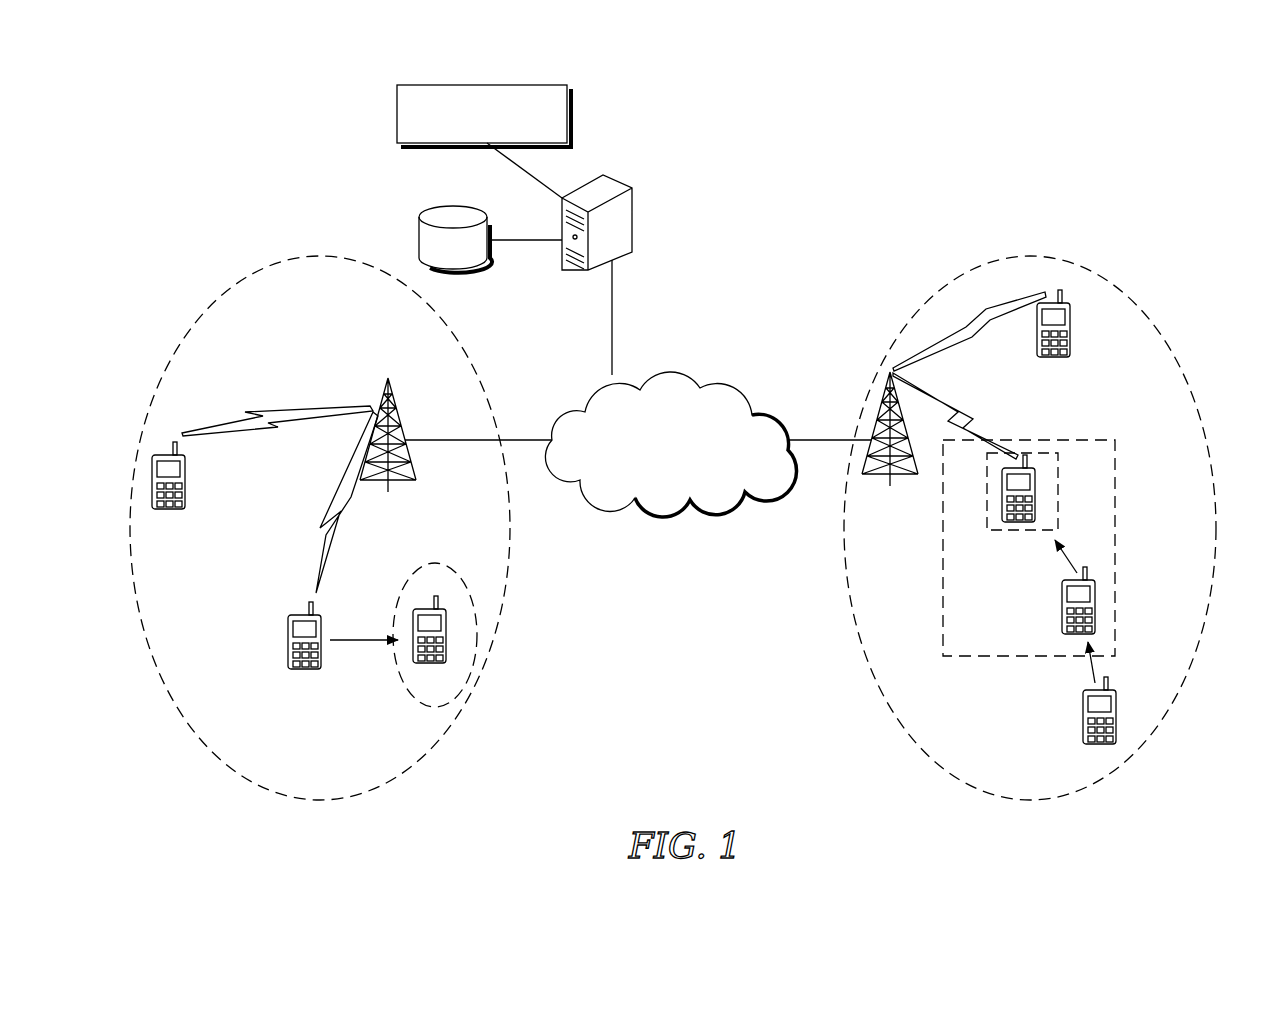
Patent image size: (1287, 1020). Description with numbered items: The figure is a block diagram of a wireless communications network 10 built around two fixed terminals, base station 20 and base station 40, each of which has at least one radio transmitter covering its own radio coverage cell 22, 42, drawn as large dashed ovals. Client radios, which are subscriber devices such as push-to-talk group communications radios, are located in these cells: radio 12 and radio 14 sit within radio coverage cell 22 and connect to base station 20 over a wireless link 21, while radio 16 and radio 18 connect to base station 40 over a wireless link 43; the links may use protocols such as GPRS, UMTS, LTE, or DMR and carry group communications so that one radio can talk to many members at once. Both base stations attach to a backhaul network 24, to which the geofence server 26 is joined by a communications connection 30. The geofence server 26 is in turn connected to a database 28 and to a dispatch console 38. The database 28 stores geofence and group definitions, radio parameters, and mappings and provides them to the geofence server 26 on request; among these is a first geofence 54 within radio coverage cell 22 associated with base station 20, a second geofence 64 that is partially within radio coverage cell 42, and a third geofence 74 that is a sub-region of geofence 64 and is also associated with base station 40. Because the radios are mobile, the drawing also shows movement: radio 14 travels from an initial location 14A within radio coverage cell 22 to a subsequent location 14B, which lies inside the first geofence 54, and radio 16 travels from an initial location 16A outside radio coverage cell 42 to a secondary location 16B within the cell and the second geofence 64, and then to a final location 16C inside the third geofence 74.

The communications network 10 is at (166, 77).
The client radio 12 is at (185, 480).
The client radio 14 is at (306, 616).
The initial location 14A is at (302, 680).
The subsequent location 14B is at (436, 680).
The client radio 16 is at (1034, 492).
The initial location 16A is at (1097, 750).
The secondary location 16B is at (1067, 642).
The final location 16C is at (1007, 537).
The client radio 18 is at (1071, 328).
The fixed terminal 20 is at (395, 412).
The wireless link 21 is at (277, 440).
The radio coverage cell 22 is at (222, 300).
The backhaul network 24 is at (792, 462).
The geofence server 26 is at (633, 220).
The database 28 is at (452, 205).
The communications connection 30 is at (612, 318).
The dispatch console 38 is at (570, 118).
The fixed terminal 40 is at (884, 396).
The radio coverage cell 42 is at (1120, 291).
The wireless link 43 is at (994, 338).
The first geofence 54 is at (431, 563).
The second geofence 64 is at (1078, 440).
The third geofence 74 is at (1058, 516).